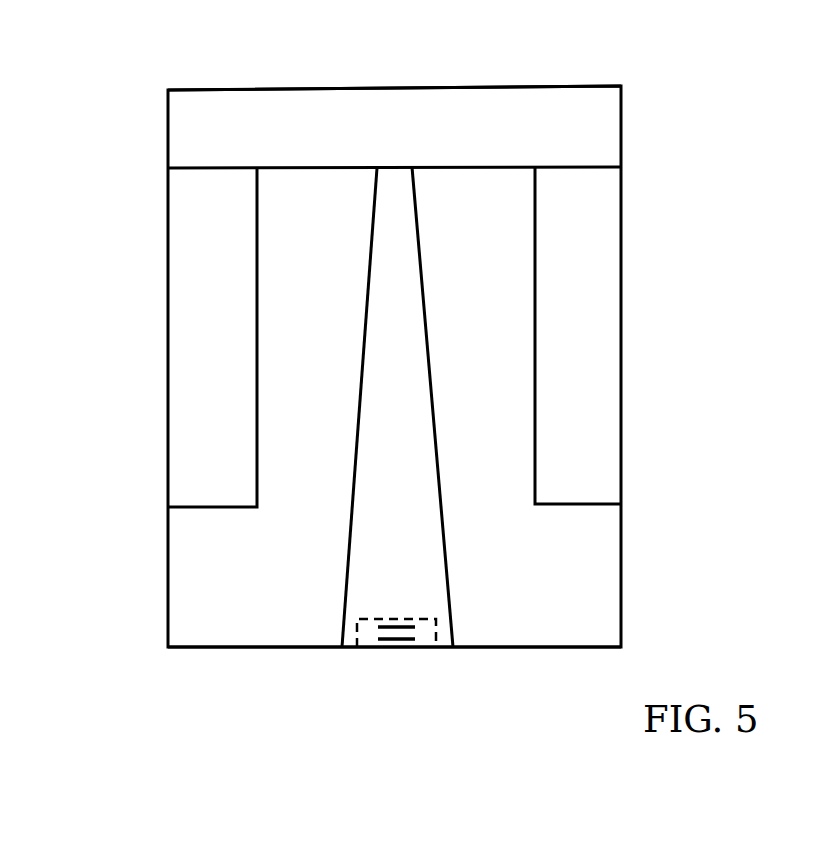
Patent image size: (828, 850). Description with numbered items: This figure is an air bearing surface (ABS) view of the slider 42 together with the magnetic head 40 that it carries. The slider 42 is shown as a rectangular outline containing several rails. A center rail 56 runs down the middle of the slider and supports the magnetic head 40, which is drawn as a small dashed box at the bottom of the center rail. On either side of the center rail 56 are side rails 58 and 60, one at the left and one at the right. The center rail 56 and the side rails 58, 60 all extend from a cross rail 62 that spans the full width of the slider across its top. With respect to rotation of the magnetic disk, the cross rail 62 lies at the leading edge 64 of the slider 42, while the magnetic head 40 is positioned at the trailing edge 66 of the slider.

The magnetic head 40 is at (373, 634).
The slider 42 is at (145, 594).
The center rail 56 is at (380, 280).
The side rail 58 is at (181, 243).
The side rail 60 is at (594, 239).
The cross rail 62 is at (303, 97).
The leading edge 64 is at (462, 86).
The trailing edge 66 is at (517, 648).